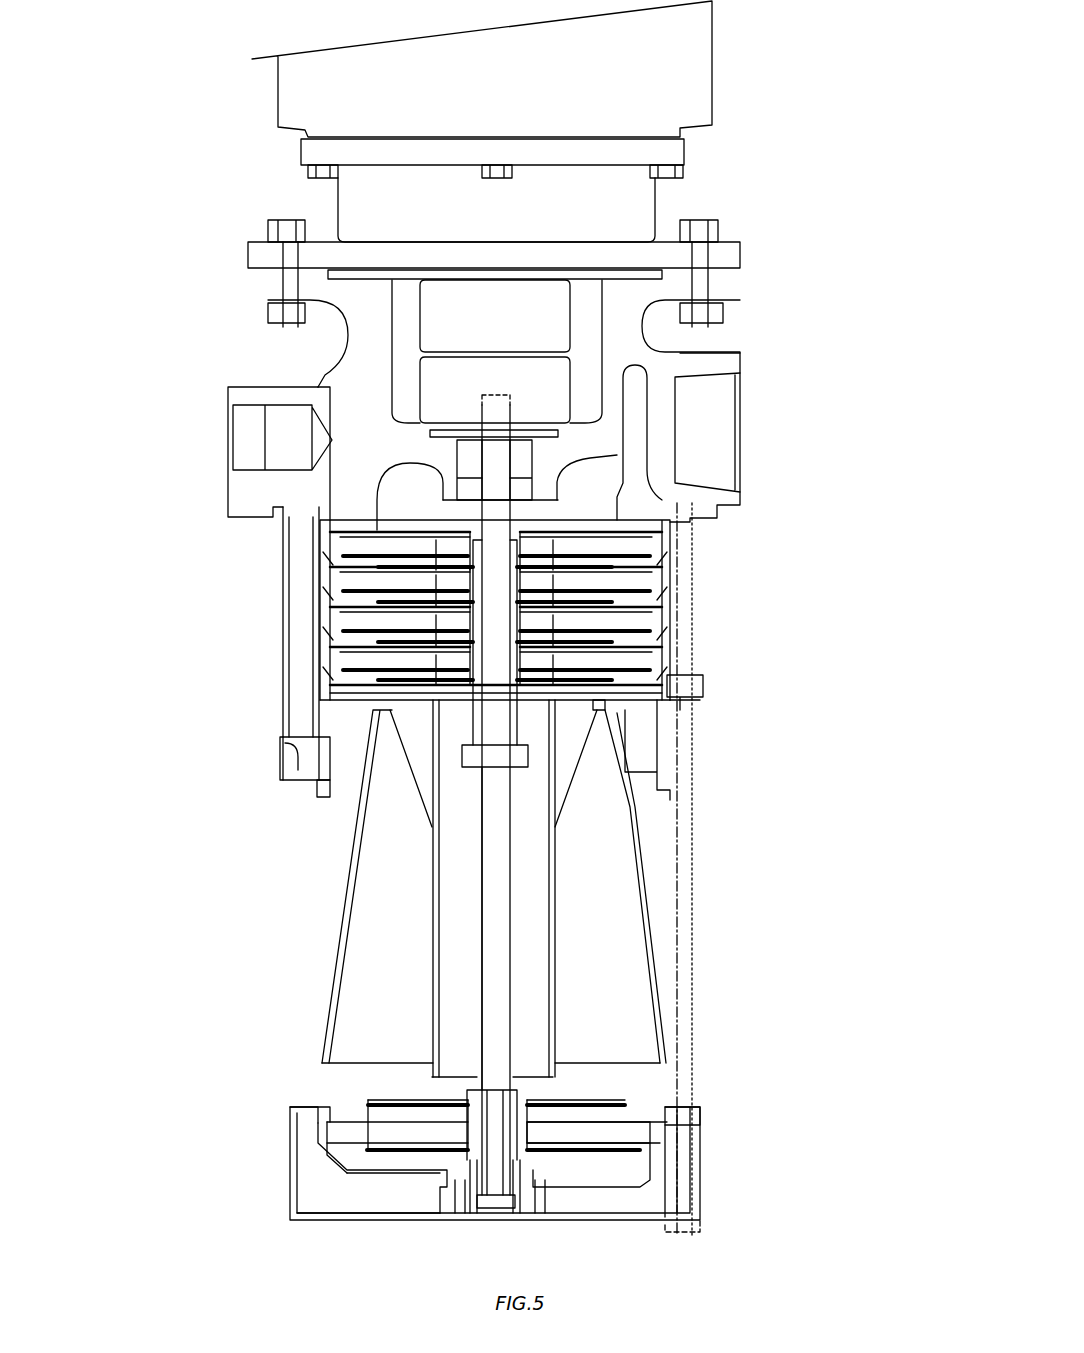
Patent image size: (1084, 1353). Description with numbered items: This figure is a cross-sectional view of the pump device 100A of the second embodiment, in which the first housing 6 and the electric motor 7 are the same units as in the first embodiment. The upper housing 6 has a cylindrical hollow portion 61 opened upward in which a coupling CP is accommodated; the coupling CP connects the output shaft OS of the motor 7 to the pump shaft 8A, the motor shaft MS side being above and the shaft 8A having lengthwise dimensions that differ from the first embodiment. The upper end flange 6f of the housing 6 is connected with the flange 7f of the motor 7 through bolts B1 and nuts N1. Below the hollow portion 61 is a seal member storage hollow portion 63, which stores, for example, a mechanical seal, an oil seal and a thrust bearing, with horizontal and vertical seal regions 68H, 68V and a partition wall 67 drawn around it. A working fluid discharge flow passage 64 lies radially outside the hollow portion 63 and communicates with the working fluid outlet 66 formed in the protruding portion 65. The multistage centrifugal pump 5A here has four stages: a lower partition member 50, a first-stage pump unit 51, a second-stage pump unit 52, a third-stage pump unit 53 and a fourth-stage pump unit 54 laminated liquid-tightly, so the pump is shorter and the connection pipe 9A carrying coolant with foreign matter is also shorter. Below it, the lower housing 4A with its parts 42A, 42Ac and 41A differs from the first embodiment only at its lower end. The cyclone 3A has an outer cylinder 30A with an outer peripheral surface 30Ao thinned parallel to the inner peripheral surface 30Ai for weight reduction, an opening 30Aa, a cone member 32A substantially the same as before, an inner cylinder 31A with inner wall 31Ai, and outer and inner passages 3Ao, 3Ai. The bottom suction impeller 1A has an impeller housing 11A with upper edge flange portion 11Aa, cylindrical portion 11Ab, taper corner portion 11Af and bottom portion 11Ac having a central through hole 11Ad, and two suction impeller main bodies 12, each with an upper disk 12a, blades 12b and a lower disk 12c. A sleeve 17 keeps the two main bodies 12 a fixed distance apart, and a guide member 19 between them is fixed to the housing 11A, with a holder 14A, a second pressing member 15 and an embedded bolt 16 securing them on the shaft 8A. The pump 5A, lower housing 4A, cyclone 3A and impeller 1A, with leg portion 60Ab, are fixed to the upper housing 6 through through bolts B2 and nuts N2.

The pump device 100A is at (215, 82).
The electric motor 7 is at (713, 90).
The coupling CP is at (480, 455).
The motor shaft MS is at (490, 470).
The output shaft OS is at (510, 490).
The bolts B1 is at (717, 223).
The flange 7f is at (747, 248).
The upper end flange 6f is at (747, 278).
The nuts N1 is at (723, 313).
The upper housing 6 is at (853, 298).
The cylindrical hollow portion 61 is at (585, 340).
The protruding portion 65 is at (743, 352).
The seal member storage hollow portion 63 is at (540, 417).
The working fluid discharge flow passage 64 is at (628, 445).
The working fluid outlet 66 is at (748, 427).
The partition wall 67 is at (545, 498).
The horizontal seal portion 68H is at (500, 512).
The vertical seal portion 68V is at (490, 525).
The connection pipe 9A is at (280, 667).
The lower housing 4A is at (160, 688).
The inlet pipe 42A is at (280, 743).
The inlet pipe corner 42Ac is at (280, 760).
The inlet bracket 41A is at (313, 783).
The multistage centrifugal pump 5A is at (818, 560).
The fourth-stage pump unit 54 is at (670, 547).
The third-stage pump unit 53 is at (670, 583).
The second-stage pump unit 52 is at (670, 622).
The first-stage pump unit 51 is at (670, 658).
The lower partition member 50 is at (703, 686).
The nuts N2 is at (697, 710).
The cyclone 3A is at (818, 843).
The outer cylinder 30A is at (640, 842).
The cone member 32A is at (633, 868).
The inner cylinder 31A is at (553, 863).
The outer passage 3Ao is at (600, 705).
The cylinder opening 30Aa is at (537, 703).
The inner passage 3Ai is at (597, 780).
The outer peripheral surface 30Ao is at (633, 980).
The inner peripheral surface 30Ai is at (653, 980).
The pump shaft 8A is at (513, 883).
The inner cylinder wall 31Ai is at (603, 1080).
The bottom suction impeller 1A is at (135, 937).
The impeller housing 11A is at (210, 1105).
The upper edge flange portion 11Aa is at (307, 1103).
The cylindrical portion 11Ab is at (333, 1163).
The taper corner portion 11Af is at (333, 1170).
The bottom portion 11Ac is at (343, 1193).
The through hole 11Ad is at (440, 1183).
The suction impeller main body 12 is at (215, 917).
The upper disk 12a is at (395, 1100).
The blades 12b is at (390, 1105).
The lower disk 12c is at (385, 1110).
The bearing holder 14A is at (475, 1077).
The second pressing member 15 is at (473, 1213).
The embedded bolt 16 is at (507, 1213).
The sleeve 17 is at (527, 1135).
The guide member 19 is at (633, 1135).
The casing leg 60Ab is at (673, 1130).
The through bolts B2 is at (693, 1233).